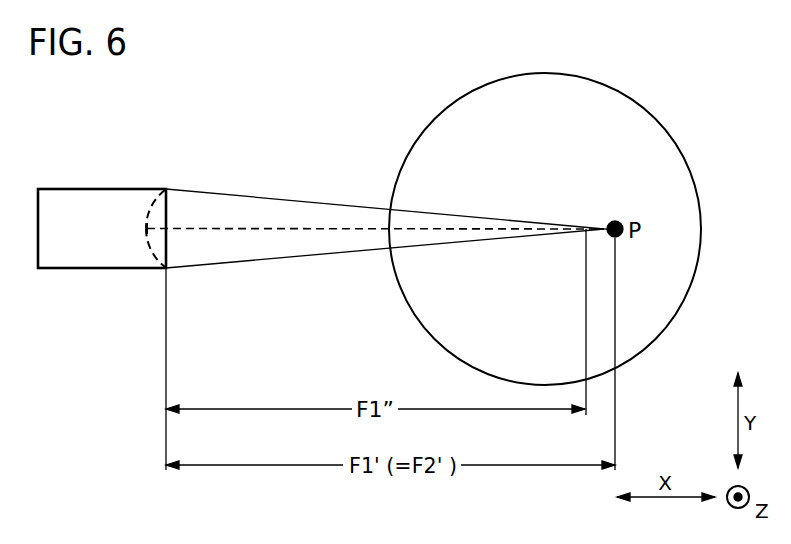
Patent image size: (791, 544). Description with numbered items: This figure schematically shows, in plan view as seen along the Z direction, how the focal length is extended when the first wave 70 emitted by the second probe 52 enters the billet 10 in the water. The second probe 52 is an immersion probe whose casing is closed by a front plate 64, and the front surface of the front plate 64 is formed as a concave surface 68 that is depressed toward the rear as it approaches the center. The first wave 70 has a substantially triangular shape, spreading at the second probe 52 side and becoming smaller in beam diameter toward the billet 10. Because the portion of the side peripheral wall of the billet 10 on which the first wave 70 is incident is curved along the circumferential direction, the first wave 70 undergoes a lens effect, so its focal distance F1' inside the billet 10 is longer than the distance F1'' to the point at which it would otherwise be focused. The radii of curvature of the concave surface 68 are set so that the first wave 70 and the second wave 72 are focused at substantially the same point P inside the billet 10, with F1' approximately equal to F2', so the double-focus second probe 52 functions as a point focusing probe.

The billet 10 is at (652, 125).
The second probe 52 is at (86, 195).
The front plate 64 is at (167, 208).
The concave surface 68 is at (167, 248).
The first wave 70 is at (267, 199).
The second wave 72 is at (240, 228).